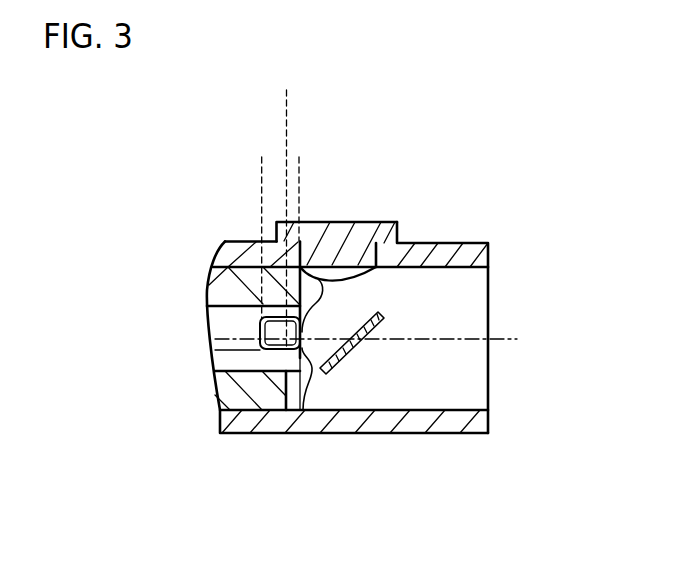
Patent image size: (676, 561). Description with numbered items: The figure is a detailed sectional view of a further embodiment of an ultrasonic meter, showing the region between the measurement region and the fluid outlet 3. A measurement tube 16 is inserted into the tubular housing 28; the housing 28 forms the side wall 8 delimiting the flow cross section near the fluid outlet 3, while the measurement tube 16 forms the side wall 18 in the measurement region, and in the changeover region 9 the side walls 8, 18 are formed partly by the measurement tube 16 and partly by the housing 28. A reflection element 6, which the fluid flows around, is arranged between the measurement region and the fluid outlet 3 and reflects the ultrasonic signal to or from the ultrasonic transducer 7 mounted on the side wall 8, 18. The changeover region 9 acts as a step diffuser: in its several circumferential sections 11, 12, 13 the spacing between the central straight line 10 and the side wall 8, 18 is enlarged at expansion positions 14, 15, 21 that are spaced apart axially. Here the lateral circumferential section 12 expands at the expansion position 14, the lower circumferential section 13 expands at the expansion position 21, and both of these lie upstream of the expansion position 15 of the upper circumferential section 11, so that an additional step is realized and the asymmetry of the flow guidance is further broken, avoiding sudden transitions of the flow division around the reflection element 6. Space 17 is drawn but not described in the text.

The fluid outlet 3 is at (501, 298).
The reflection element 6 is at (383, 319).
The ultrasonic transducer 7 is at (351, 232).
The side wall 8 is at (425, 279).
The changeover region 9 is at (281, 349).
The central straight line 10 is at (470, 340).
The upper circumferential section 11 is at (334, 262).
The lateral circumferential section 12 is at (308, 346).
The lower circumferential section 13 is at (325, 379).
The expansion position 14 is at (256, 219).
The expansion position 15 is at (301, 180).
The measurement tube 16 is at (228, 387).
The chamber 17 is at (428, 368).
The side wall 18 is at (226, 319).
The expansion position 21 is at (290, 203).
The housing 28 is at (340, 423).